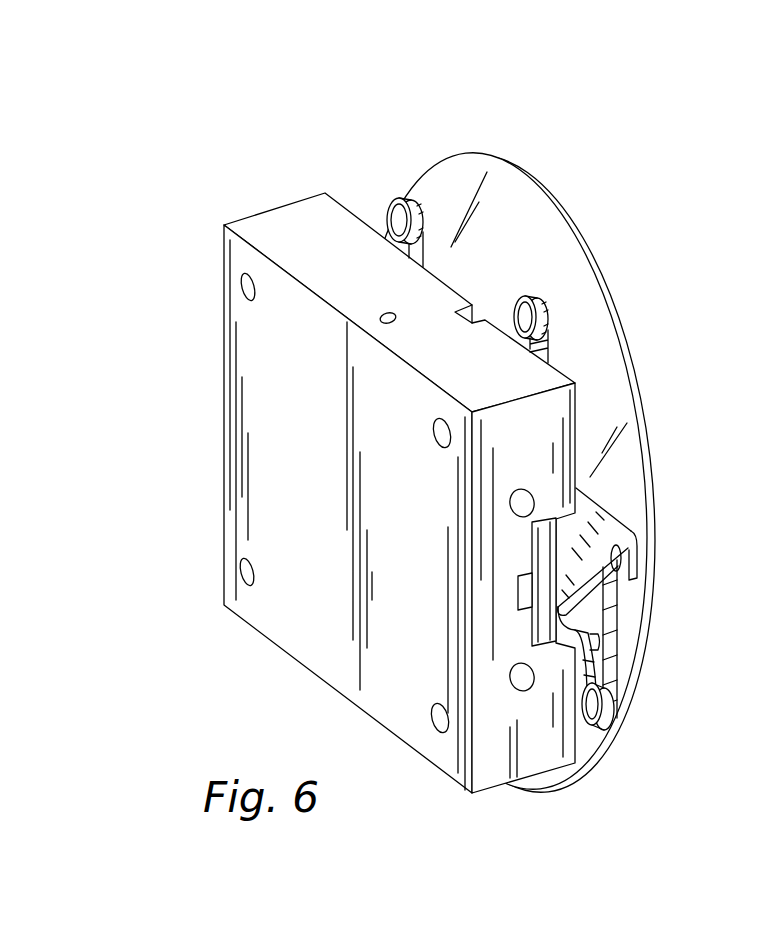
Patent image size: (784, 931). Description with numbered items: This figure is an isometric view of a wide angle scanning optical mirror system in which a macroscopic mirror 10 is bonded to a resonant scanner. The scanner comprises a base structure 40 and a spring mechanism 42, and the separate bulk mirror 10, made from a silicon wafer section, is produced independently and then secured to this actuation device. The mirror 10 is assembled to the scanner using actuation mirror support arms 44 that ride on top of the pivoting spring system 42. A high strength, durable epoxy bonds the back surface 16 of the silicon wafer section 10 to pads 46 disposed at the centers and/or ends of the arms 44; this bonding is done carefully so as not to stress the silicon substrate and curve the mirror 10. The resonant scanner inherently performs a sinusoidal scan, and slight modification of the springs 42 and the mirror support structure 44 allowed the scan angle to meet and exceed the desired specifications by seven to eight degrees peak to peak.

The macroscopic mirror 10 is at (577, 231).
The back surface 16 is at (500, 205).
The base structure 40 is at (313, 607).
The spring mechanism 42 is at (600, 527).
The actuation mirror support arms 44 is at (418, 247).
The pads 46 is at (423, 216).